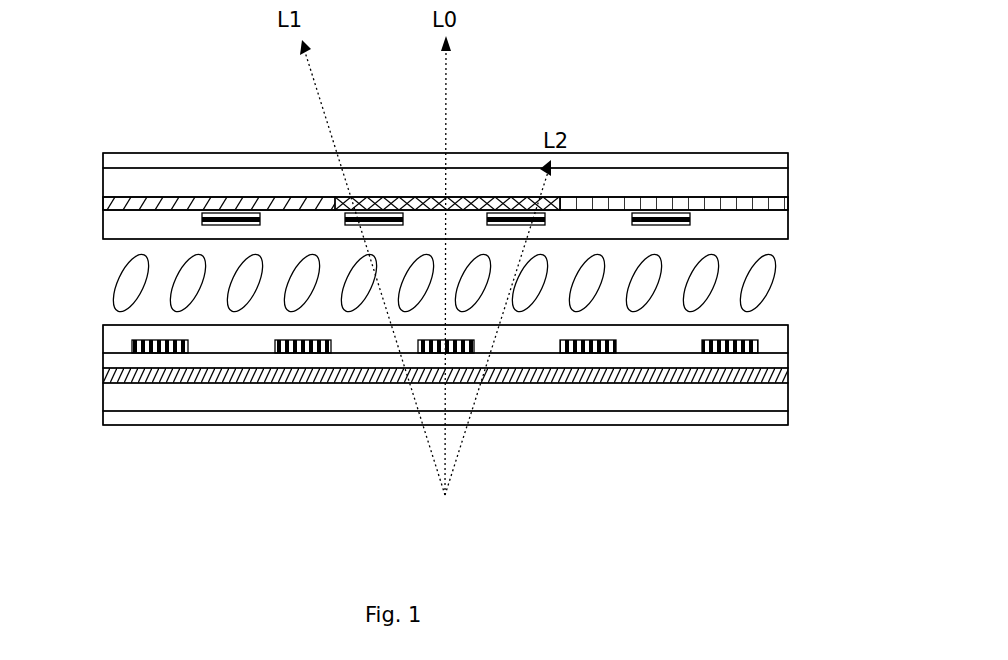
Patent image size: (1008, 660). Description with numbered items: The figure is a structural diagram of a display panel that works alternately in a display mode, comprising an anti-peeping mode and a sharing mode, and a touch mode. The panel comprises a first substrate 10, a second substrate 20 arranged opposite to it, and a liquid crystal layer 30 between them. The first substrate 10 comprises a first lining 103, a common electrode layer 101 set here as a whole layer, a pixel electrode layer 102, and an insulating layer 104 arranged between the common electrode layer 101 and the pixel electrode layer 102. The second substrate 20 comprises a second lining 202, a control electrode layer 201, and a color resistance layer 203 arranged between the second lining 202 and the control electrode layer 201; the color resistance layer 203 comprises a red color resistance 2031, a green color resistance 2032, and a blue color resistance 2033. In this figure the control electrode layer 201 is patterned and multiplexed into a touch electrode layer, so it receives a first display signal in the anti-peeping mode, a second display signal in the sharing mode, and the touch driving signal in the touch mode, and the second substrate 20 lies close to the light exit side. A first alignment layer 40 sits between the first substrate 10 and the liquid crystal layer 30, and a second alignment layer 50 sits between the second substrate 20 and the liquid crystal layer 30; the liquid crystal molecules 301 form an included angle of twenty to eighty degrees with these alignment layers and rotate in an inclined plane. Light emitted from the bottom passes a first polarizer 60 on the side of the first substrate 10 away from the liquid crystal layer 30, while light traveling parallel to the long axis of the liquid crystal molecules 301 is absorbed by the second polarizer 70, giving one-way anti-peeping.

The first substrate 10 is at (88, 347).
The second substrate 20 is at (82, 172).
The liquid crystal layer 30 is at (513, 275).
The liquid crystal molecules 301 is at (777, 270).
The first alignment layer 40 is at (102, 342).
The second alignment layer 50 is at (102, 228).
The first polarizer 60 is at (788, 415).
The second polarizer 70 is at (788, 159).
The common electrode layer 101 is at (788, 375).
The pixel electrode layer 102 is at (759, 346).
The first lining 103 is at (788, 400).
The insulating layer 104 is at (788, 362).
The control electrode layer 201 is at (690, 219).
The second lining 202 is at (788, 184).
The color resistance layer 203 is at (445, 127).
The red color resistance 2031 is at (190, 198).
The green color resistance 2032 is at (425, 198).
The blue color resistance 2033 is at (674, 159).